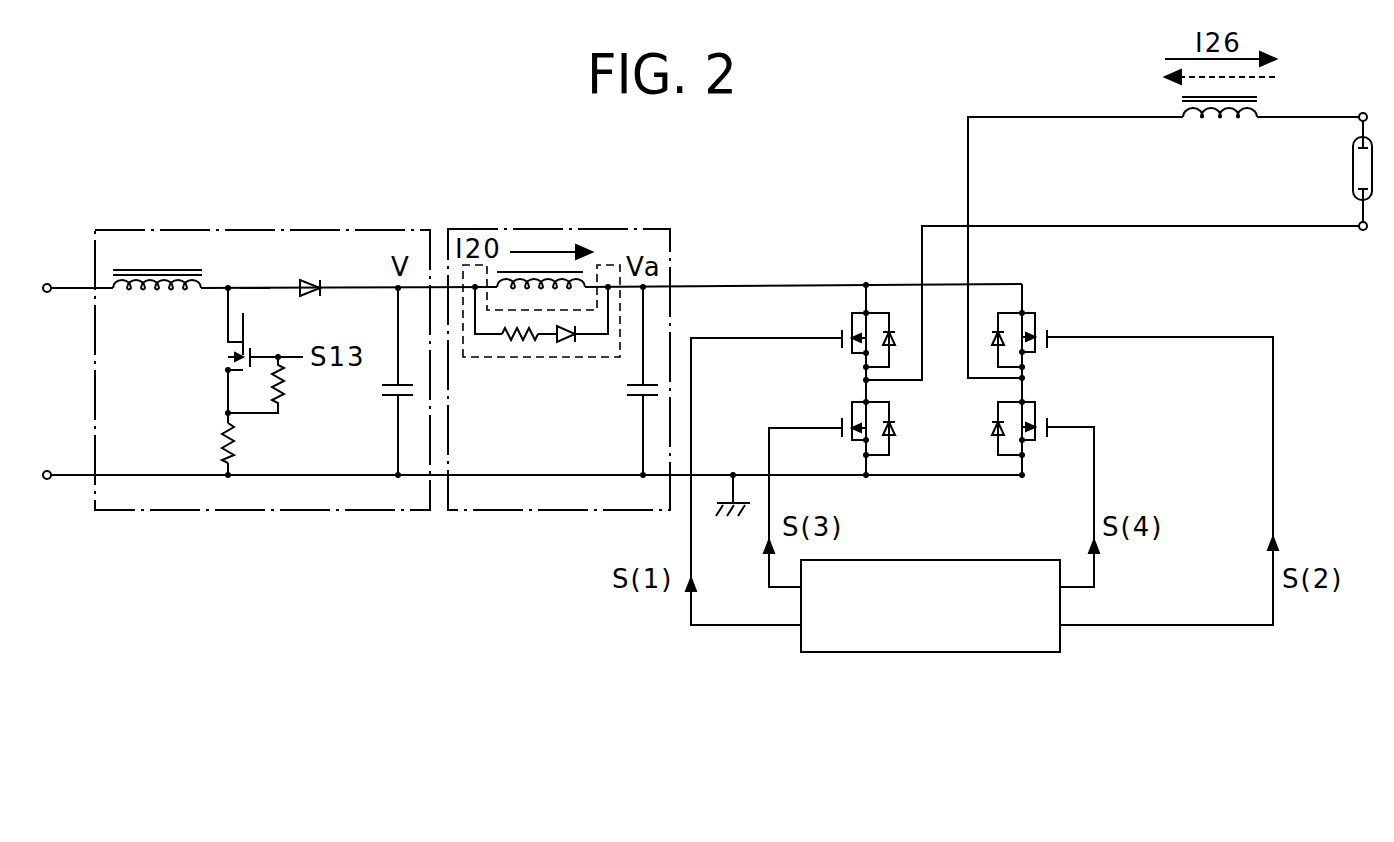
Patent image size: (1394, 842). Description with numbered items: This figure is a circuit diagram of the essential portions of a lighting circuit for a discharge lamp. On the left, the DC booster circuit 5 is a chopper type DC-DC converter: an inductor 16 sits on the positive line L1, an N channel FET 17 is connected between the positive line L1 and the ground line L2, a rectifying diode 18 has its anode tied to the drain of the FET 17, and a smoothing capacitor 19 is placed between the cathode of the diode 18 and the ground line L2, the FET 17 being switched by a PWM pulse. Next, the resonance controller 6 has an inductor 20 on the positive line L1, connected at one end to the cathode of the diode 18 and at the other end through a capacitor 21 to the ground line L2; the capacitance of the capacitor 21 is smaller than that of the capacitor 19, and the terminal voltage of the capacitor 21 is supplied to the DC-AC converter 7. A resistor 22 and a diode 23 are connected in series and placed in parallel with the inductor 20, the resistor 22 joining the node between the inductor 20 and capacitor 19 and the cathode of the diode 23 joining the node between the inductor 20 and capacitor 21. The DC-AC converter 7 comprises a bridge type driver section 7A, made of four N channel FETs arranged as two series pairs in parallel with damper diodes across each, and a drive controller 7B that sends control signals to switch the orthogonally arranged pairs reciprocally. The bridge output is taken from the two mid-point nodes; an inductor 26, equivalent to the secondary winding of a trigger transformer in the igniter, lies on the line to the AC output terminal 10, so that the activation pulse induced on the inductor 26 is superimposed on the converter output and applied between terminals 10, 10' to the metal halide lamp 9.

The DC booster circuit 5 is at (200, 229).
The positive line L1 is at (257, 288).
The ground line L2 is at (300, 478).
The inductor 16 is at (156, 298).
The N channel FET 17 is at (225, 350).
The rectifying diode 18 is at (308, 283).
The smoothing capacitor 19 is at (385, 398).
The resonance controller 6 is at (528, 228).
The inductor 20 is at (588, 278).
The capacitor 21 is at (630, 402).
The resistor 22 is at (508, 342).
The diode 23 is at (566, 346).
The DC-AC converter 7 is at (808, 260).
The bridge type driver section 7A is at (962, 430).
The drive controller 7B is at (955, 653).
The inductor 26 is at (1232, 122).
The metal halide lamp 9 is at (1353, 165).
The AC output terminal 10 is at (1366, 91).
The AC output terminal 10' is at (1366, 254).